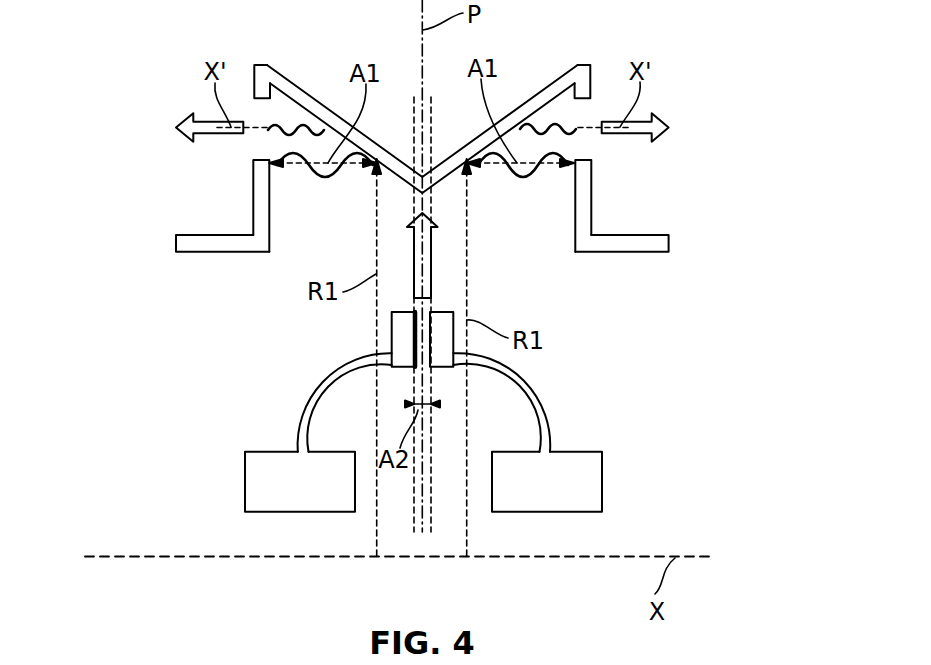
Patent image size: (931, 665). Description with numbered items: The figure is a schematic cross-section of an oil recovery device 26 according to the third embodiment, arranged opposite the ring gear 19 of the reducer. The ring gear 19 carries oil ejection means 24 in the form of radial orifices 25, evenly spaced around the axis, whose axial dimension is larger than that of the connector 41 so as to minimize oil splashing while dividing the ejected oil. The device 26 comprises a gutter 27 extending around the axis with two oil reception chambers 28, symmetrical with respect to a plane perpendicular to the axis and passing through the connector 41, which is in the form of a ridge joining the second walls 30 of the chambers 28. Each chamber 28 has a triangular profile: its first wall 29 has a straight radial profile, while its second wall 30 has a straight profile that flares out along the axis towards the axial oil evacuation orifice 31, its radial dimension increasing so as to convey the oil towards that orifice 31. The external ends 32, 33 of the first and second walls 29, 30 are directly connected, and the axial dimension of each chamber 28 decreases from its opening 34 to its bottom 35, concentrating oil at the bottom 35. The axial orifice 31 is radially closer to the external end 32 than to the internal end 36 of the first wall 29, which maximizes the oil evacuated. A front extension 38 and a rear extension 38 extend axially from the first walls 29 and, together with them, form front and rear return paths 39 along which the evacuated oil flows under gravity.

The ring gear 19 is at (556, 391).
The oil ejection means 24 is at (410, 327).
The orifices 25 is at (418, 340).
The oil recovery device 26 is at (693, 62).
The gutter 27 is at (378, 133).
The oil reception chamber 28 is at (298, 147).
The first wall 29 is at (252, 197).
The second wall 30 is at (352, 138).
The axial oil evacuation orifice 31 is at (257, 153).
The external end of the first wall 32 is at (267, 67).
The external end of the second wall 33 is at (582, 68).
The opening of the chamber 34 is at (332, 197).
The bottom of the chamber 35 is at (283, 114).
The internal end of the first wall 36 is at (266, 248).
The extension 38 is at (222, 242).
The return path 39 is at (224, 215).
The connector 41 is at (423, 197).